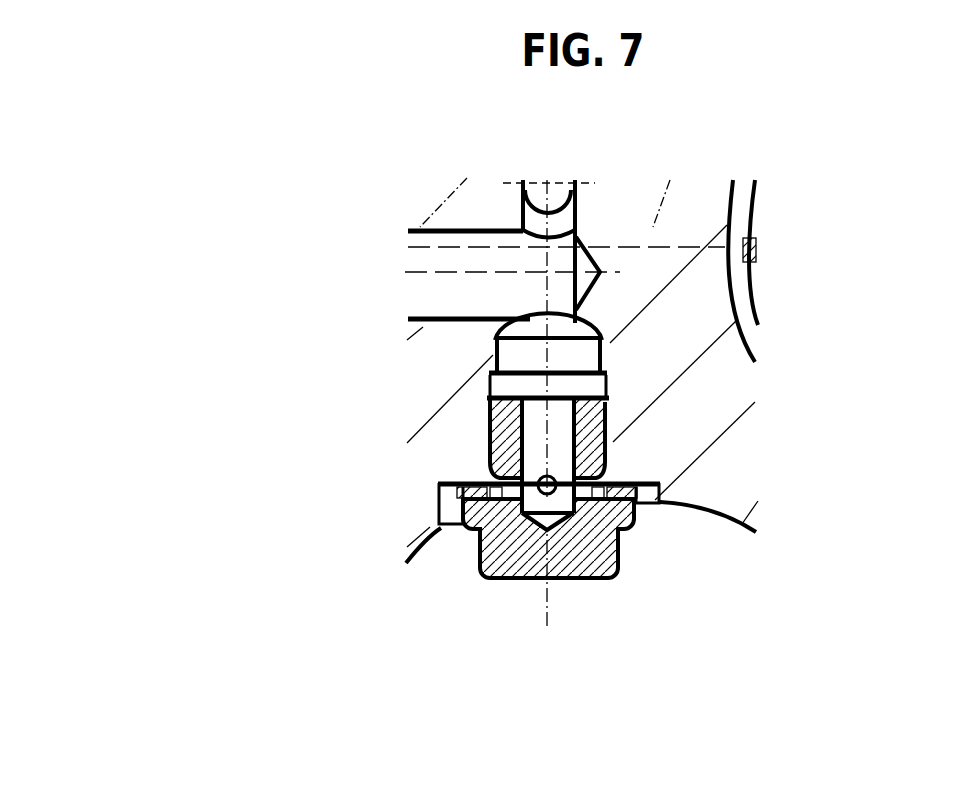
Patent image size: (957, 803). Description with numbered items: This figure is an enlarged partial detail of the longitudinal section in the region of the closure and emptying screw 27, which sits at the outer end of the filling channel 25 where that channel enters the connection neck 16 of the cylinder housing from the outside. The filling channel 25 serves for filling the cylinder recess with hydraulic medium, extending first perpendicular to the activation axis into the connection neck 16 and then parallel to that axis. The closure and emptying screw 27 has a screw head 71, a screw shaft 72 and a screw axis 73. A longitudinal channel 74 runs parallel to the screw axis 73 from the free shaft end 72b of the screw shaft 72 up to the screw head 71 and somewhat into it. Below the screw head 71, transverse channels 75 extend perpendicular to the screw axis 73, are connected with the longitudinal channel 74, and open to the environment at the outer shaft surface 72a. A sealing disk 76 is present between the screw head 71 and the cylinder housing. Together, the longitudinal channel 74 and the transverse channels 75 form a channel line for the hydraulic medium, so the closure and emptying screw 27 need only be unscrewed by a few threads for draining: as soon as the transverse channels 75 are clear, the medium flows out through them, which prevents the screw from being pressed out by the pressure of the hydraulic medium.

The connection neck 16 is at (600, 247).
The filling channel 25 is at (445, 293).
The closure and emptying screw 27 is at (437, 513).
The screw head 71 is at (573, 550).
The screw shaft 72 is at (487, 428).
The outer shaft surface 72a is at (613, 442).
The free shaft end 72b is at (520, 388).
The screw axis 73 is at (542, 347).
The longitudinal channel 74 is at (612, 425).
The transverse channels 75 is at (618, 480).
The sealing disk 76 is at (437, 485).